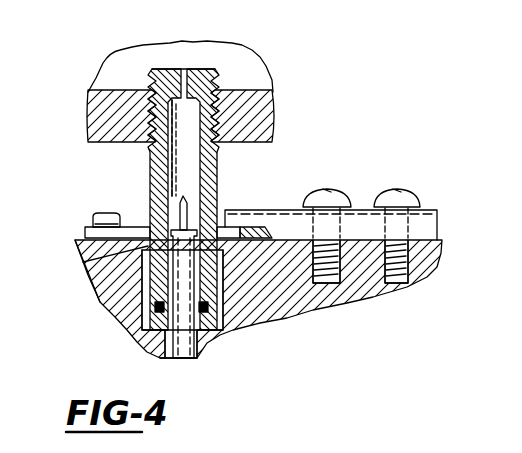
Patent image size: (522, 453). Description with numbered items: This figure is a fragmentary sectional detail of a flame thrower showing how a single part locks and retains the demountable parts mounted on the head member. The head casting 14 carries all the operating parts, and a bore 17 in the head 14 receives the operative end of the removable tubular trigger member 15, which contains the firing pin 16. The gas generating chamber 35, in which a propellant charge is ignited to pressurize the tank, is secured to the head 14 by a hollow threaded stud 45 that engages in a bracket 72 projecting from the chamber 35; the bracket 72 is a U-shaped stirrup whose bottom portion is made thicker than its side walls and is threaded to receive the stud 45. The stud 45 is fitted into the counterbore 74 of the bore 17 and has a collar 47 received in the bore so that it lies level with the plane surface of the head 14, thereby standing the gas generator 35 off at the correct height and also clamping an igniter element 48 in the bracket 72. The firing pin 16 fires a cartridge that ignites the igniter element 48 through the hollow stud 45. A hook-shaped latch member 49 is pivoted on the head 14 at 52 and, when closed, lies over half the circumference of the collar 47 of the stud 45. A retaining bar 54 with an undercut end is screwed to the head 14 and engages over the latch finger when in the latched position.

The head casting 14 is at (268, 289).
The tubular trigger member 15 is at (170, 352).
The firing pin 16 is at (186, 200).
The bore 17 is at (193, 338).
The gas generating chamber 35 is at (80, 121).
The hollow threaded stud 45 is at (225, 172).
The collar 47 is at (84, 263).
The igniter element 48 is at (241, 71).
The latch member 49 is at (85, 232).
The pivot 52 is at (113, 212).
The retaining bar 54 is at (448, 217).
The bracket 72 is at (272, 123).
The counterbore 74 is at (127, 310).